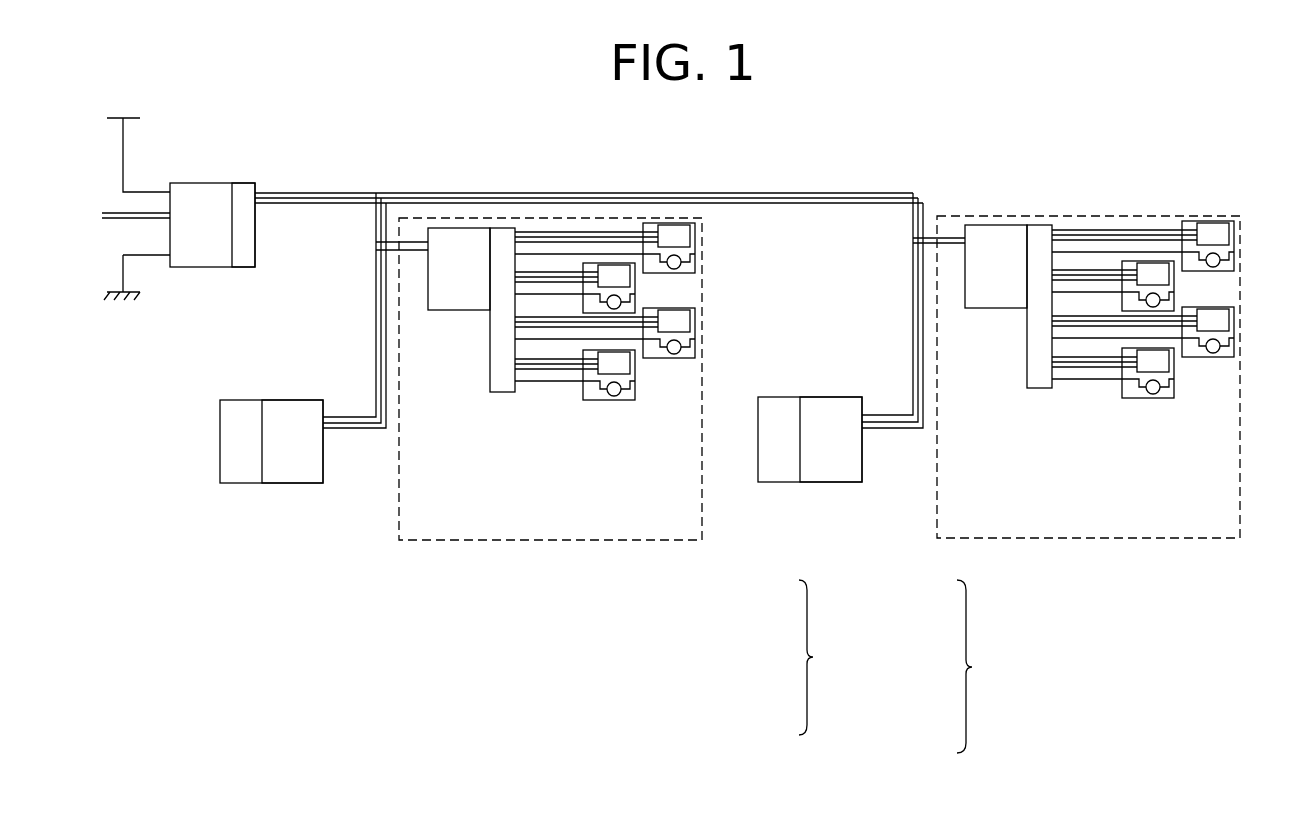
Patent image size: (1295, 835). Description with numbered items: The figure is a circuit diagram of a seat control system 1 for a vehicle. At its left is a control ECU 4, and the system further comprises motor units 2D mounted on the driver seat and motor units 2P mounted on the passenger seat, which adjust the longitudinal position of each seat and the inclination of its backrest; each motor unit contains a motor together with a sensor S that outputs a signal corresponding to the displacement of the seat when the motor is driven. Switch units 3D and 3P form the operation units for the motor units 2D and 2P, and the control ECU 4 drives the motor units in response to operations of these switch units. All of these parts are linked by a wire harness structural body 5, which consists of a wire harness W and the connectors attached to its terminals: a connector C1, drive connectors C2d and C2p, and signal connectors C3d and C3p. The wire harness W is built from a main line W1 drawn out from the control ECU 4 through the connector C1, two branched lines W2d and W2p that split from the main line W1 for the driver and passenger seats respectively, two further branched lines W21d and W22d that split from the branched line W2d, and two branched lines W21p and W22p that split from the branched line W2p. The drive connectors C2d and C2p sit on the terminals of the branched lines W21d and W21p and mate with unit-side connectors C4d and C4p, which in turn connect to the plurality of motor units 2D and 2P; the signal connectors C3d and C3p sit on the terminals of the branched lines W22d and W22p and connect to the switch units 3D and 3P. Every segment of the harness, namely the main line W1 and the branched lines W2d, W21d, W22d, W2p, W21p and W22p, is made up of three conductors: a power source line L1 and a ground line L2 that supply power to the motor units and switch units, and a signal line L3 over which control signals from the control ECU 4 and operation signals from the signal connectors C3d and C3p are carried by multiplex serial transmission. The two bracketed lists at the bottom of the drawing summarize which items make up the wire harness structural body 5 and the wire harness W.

The seat control system 1 is at (1021, 131).
The control ECU 4 is at (186, 183).
The connector C1 is at (248, 183).
The main line W1 is at (311, 185).
The branched line W2d is at (365, 231).
The branched line W22d is at (365, 295).
The branched line W21d is at (422, 263).
The branched line W2p is at (654, 162).
The branched line W21p is at (954, 228).
The branched line W22p is at (902, 299).
The power source line L1 is at (803, 192).
The ground line L2 is at (847, 197).
The signal line L3 is at (887, 202).
The drive connector C2d is at (458, 310).
The unit-side connector C4d is at (502, 392).
The drive connector C2p is at (997, 308).
The unit-side connector C4p is at (1040, 388).
The switch unit 3D is at (237, 400).
The signal connector C3d is at (292, 400).
The switch unit 3P is at (778, 397).
The signal connector C3p is at (833, 397).
The motor unit 2D is at (636, 288).
The motor unit 2P is at (1175, 286).
The sensor S is at (615, 274).
The wire harness structural body 5 is at (790, 657).
The wire harness W is at (945, 666).